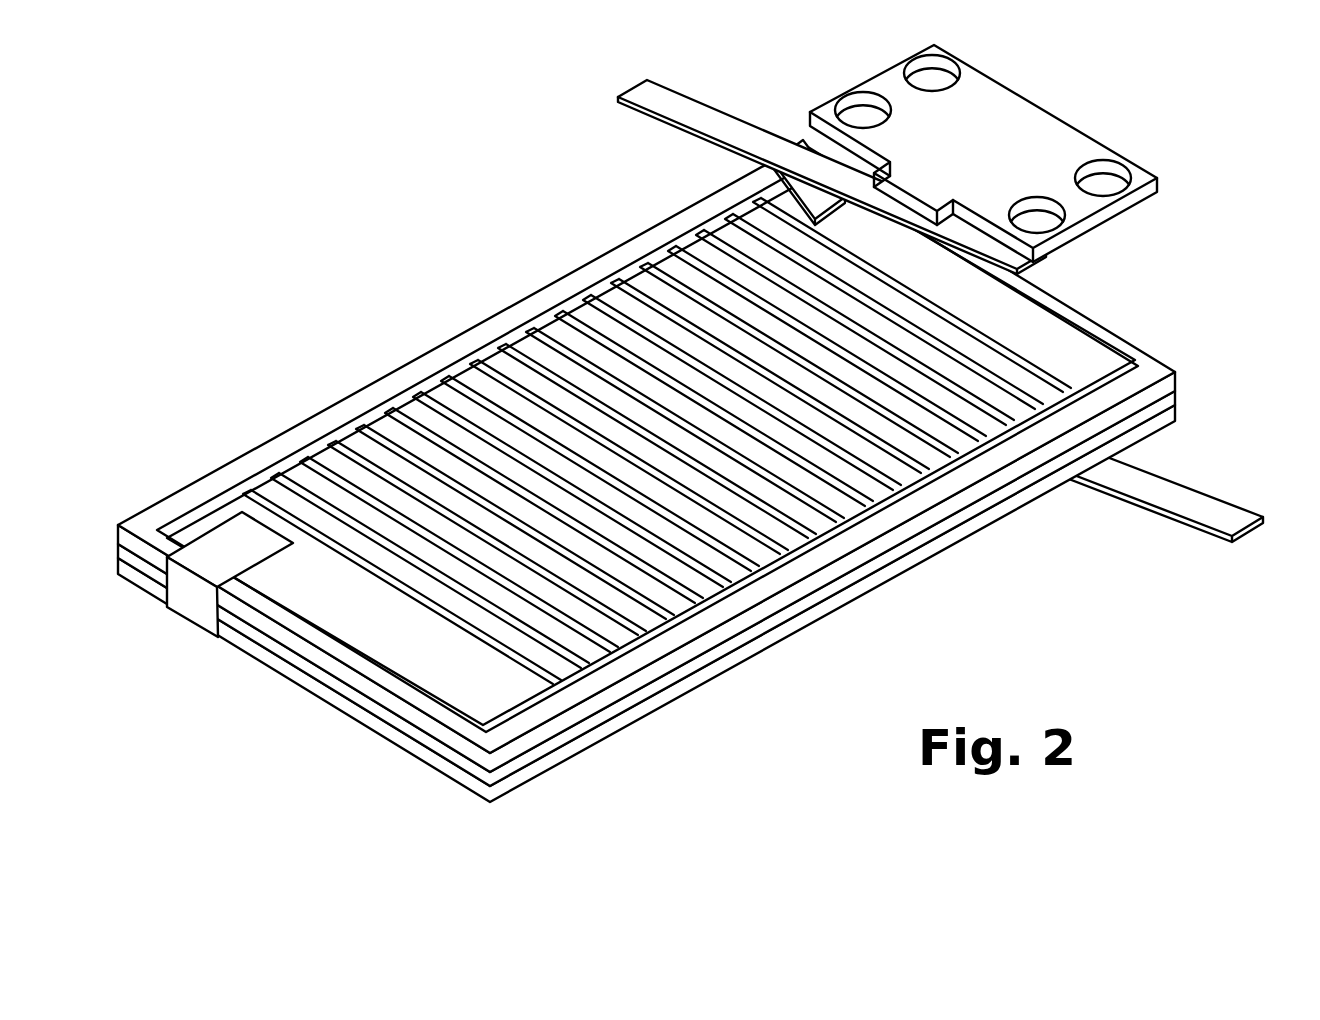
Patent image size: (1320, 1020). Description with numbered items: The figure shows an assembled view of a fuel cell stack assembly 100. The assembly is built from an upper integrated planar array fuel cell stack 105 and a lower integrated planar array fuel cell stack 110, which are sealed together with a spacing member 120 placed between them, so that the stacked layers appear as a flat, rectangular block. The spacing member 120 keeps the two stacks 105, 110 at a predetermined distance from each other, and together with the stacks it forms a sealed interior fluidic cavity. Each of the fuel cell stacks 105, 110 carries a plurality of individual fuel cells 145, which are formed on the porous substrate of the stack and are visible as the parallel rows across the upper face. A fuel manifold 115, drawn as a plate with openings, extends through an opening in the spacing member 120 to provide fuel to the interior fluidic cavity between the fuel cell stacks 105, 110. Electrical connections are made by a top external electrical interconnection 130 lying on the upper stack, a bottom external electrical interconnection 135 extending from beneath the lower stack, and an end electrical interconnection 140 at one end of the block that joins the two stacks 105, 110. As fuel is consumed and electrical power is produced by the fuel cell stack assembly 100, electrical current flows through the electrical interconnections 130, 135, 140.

The fuel cell stack assembly 100 is at (708, 451).
The upper integrated planar array fuel cell stack 105 is at (1176, 378).
The lower integrated planar array fuel cell stack 110 is at (1168, 415).
The fuel manifold 115 is at (998, 137).
The spacing member 120 is at (506, 770).
The top external electrical interconnection 130 is at (670, 103).
The bottom external electrical interconnection 135 is at (1232, 512).
The end electrical interconnection 140 is at (187, 602).
The individual fuel cells 145 is at (452, 402).